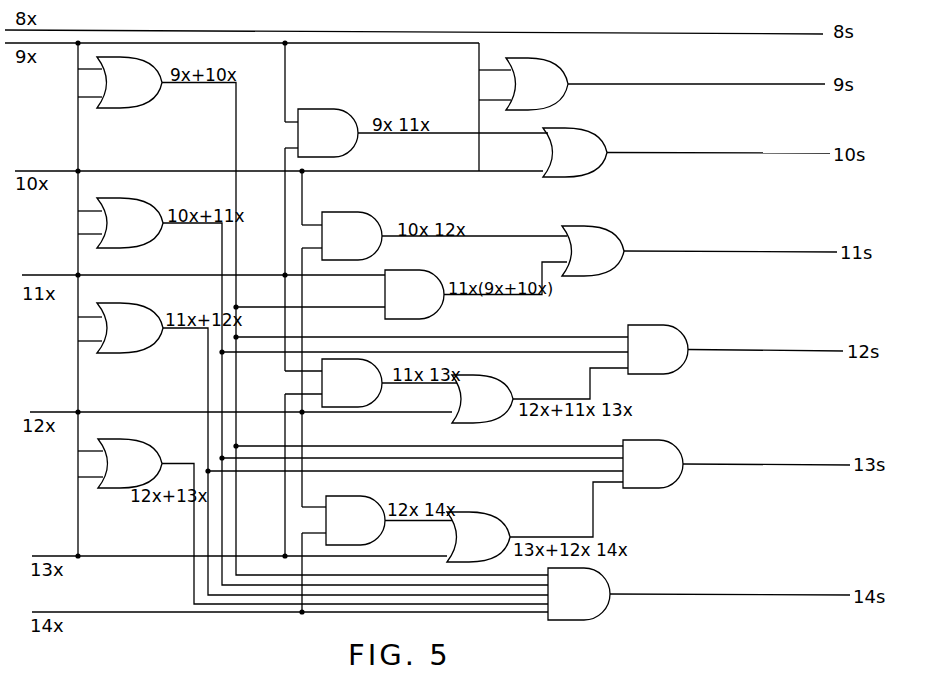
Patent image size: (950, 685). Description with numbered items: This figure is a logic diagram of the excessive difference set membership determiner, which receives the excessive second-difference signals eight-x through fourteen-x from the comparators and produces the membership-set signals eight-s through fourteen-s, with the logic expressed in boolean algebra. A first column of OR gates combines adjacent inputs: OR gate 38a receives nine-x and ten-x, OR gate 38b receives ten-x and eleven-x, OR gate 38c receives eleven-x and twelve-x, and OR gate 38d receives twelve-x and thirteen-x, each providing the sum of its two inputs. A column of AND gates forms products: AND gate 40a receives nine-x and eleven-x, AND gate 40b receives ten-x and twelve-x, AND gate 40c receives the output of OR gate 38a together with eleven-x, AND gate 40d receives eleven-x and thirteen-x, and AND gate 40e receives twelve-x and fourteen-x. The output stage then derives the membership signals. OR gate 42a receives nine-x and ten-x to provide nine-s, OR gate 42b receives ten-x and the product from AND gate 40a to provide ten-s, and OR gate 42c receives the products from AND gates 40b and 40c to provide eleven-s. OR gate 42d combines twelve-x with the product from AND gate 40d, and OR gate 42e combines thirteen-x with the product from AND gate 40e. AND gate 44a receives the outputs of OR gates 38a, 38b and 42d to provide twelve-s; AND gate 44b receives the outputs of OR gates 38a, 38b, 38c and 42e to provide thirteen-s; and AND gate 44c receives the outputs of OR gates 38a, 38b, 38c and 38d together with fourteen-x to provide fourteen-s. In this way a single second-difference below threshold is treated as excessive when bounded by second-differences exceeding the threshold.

The OR gate 38a is at (133, 67).
The OR gate 38b is at (135, 209).
The OR gate 38c is at (135, 312).
The OR gate 38d is at (140, 455).
The AND gate 40a is at (330, 117).
The AND gate 40b is at (358, 220).
The AND gate 40c is at (420, 280).
The AND gate 40d is at (368, 373).
The AND gate 40e is at (360, 504).
The OR gate 42a is at (537, 73).
The OR gate 42b is at (590, 141).
The OR gate 42c is at (605, 240).
The OR gate 42d is at (482, 380).
The OR gate 42e is at (482, 525).
The AND gate 44a is at (675, 338).
The AND gate 44b is at (675, 455).
The AND gate 44c is at (595, 586).